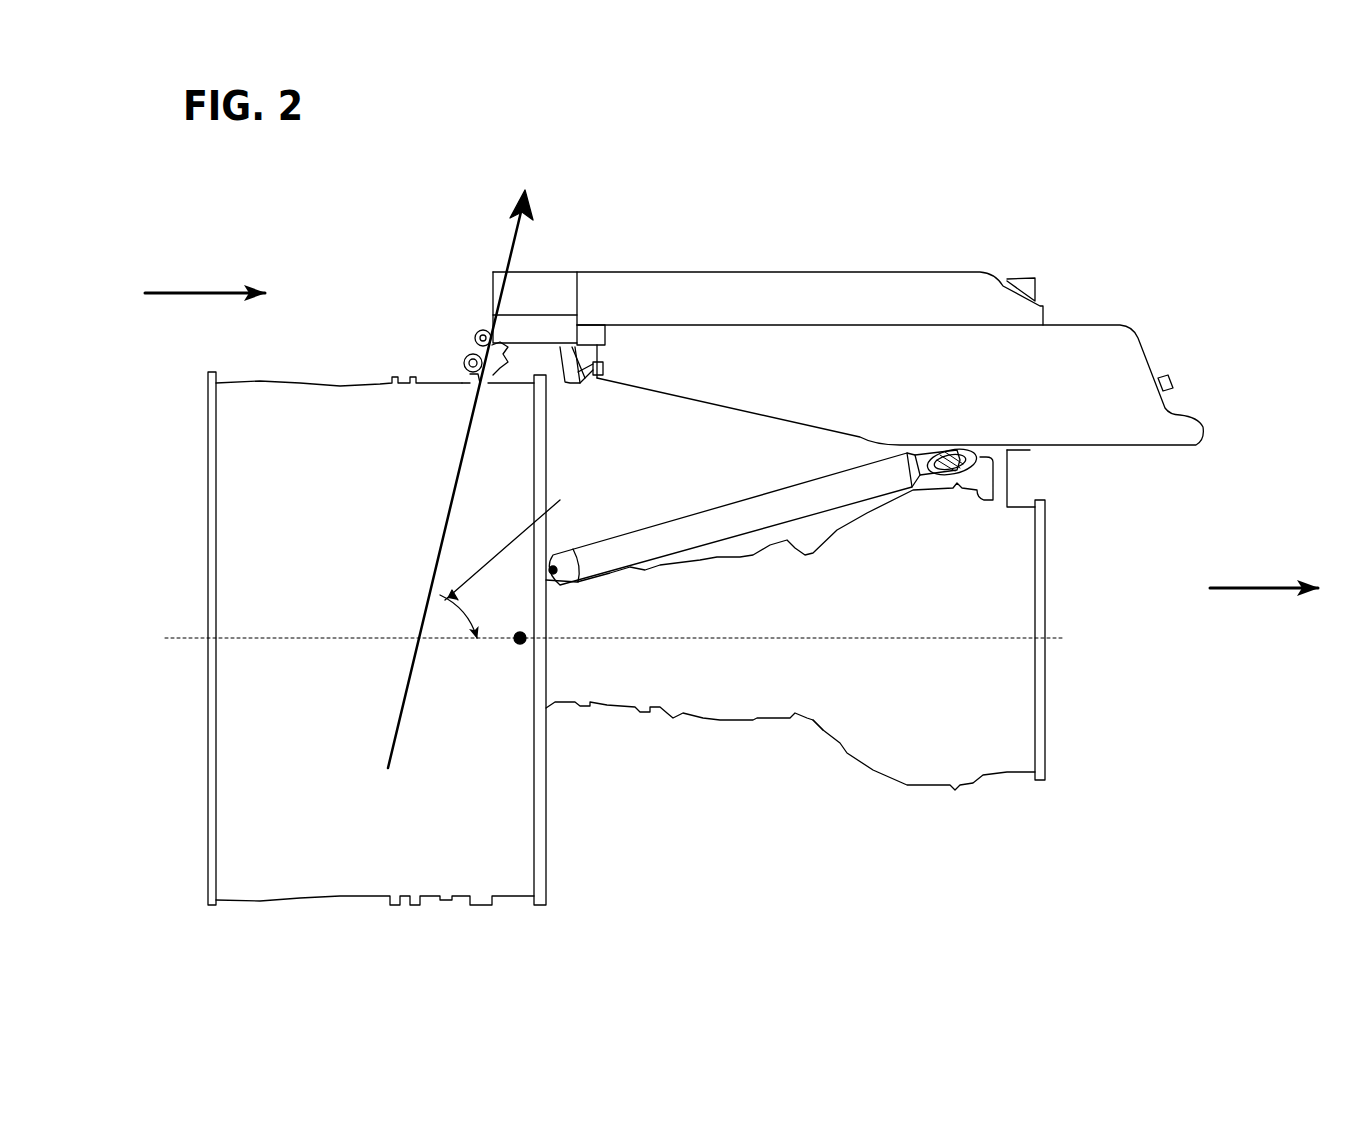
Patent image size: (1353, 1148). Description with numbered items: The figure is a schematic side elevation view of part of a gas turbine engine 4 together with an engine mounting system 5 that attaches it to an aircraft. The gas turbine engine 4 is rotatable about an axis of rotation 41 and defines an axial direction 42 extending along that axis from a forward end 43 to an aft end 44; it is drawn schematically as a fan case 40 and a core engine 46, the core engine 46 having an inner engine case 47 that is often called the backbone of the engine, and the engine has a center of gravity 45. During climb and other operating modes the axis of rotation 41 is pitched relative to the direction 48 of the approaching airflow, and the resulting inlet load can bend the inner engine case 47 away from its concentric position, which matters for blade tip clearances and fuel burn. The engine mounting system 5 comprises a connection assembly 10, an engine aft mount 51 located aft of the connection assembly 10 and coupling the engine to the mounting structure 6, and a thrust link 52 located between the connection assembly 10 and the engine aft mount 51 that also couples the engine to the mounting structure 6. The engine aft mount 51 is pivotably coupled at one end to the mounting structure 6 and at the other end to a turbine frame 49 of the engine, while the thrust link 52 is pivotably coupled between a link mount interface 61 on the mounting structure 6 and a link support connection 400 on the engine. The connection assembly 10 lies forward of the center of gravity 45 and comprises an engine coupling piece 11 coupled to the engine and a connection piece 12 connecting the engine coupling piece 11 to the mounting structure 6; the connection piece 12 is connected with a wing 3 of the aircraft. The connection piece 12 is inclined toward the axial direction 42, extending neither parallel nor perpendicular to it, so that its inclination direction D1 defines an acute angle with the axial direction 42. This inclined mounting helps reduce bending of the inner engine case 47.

The wing 3 is at (868, 240).
The gas turbine engine 4 is at (815, 855).
The engine mounting system 5 is at (395, 200).
The mounting structure 6 is at (902, 284).
The connection assembly 10 is at (350, 246).
The engine coupling piece 11 is at (460, 386).
The connection piece 12 is at (466, 350).
The fan case 40 is at (480, 860).
The axis of rotation 41 is at (682, 640).
The axial direction 42 is at (1240, 585).
The forward end 43 is at (170, 500).
The aft end 44 is at (1140, 728).
The center of gravity 45 is at (520, 646).
The core engine 46 is at (908, 835).
The inner engine case 47 is at (825, 725).
The direction of approaching airflow 48 is at (200, 290).
The turbine frame 49 is at (1025, 553).
The engine aft mount 51 is at (995, 477).
The thrust link 52 is at (692, 527).
The link mount interface 61 is at (992, 453).
The link support connection 400 is at (553, 570).
The inclination direction D1 is at (525, 232).